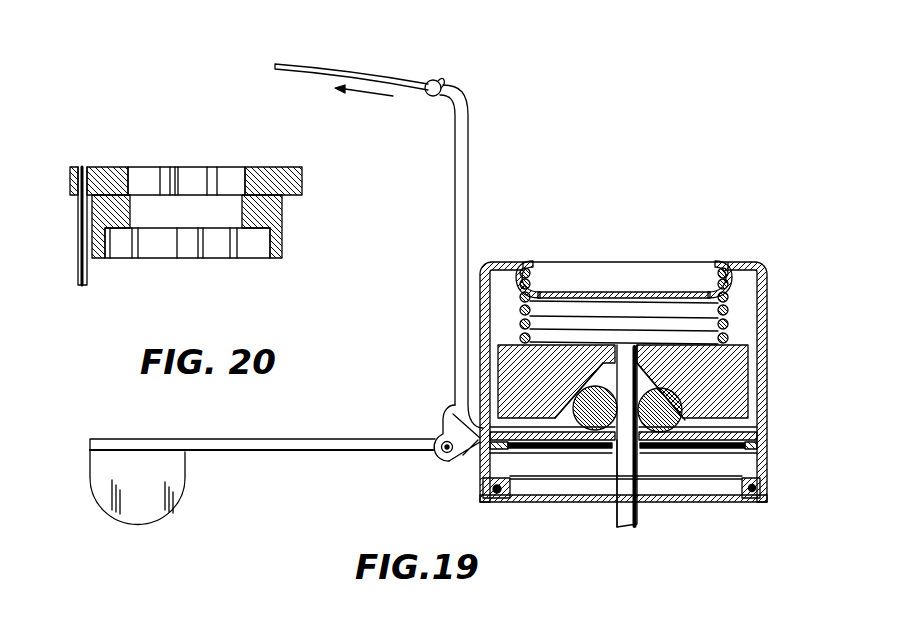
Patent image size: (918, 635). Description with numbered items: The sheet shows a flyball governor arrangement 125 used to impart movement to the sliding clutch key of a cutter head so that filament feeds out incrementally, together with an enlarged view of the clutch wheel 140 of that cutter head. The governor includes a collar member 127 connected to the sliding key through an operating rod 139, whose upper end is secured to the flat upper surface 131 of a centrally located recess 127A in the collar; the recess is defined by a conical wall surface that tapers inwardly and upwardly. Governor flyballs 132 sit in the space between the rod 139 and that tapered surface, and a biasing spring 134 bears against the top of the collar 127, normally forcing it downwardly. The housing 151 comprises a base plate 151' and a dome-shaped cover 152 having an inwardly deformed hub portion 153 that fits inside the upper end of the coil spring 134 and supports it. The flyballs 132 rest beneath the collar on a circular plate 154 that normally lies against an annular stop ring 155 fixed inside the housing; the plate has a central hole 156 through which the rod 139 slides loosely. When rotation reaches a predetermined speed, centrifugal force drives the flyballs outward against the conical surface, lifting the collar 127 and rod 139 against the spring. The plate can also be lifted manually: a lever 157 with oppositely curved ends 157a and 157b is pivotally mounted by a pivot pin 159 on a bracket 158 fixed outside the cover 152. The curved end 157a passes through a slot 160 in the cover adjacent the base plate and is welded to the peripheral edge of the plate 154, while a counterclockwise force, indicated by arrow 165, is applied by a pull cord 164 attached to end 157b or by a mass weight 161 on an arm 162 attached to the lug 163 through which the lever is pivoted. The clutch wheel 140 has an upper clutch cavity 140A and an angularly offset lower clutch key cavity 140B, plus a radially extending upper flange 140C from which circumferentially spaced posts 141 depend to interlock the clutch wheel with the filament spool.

In FIG. 19, the flyball governor arrangement 125 is at (648, 368).
In FIG. 19, the collar member 127 is at (683, 397).
In FIG. 19, the recess 127A is at (640, 381).
In FIG. 19, the flat upper surface 131 is at (640, 385).
In FIG. 19, the governor flyballs 132 is at (672, 433).
In FIG. 19, the biasing spring 134 is at (730, 310).
In FIG. 19, the operating rod 139 is at (701, 449).
In FIG. 20, the clutch wheel 140 is at (196, 217).
In FIG. 20, the upper clutch cavity 140A is at (137, 175).
In FIG. 20, the lower clutch key cavity 140B is at (127, 250).
In FIG. 20, the upper flange 140C is at (302, 188).
In FIG. 20, the posts 141 is at (80, 265).
In FIG. 19, the housing 151 is at (623, 342).
In FIG. 19, the base plate 151' is at (623, 510).
In FIG. 19, the dome-shaped cover 152 is at (660, 247).
In FIG. 19, the hub portion 153 is at (615, 282).
In FIG. 19, the circular plate 154 is at (752, 438).
In FIG. 19, the annular stop ring 155 is at (752, 448).
In FIG. 19, the central hole 156 is at (612, 447).
In FIG. 19, the lever 157 is at (468, 158).
In FIG. 19, the curved end 157a is at (450, 462).
In FIG. 19, the curved end 157b is at (447, 81).
In FIG. 19, the bracket 158 is at (445, 412).
In FIG. 19, the pivot pin 159 is at (440, 451).
In FIG. 19, the slot 160 is at (482, 464).
In FIG. 19, the mass weight 161 is at (183, 487).
In FIG. 19, the arm 162 is at (313, 452).
In FIG. 19, the lug 163 is at (443, 445).
In FIG. 19, the pull cord 164 is at (333, 66).
In FIG. 19, the arrow 165 is at (370, 97).